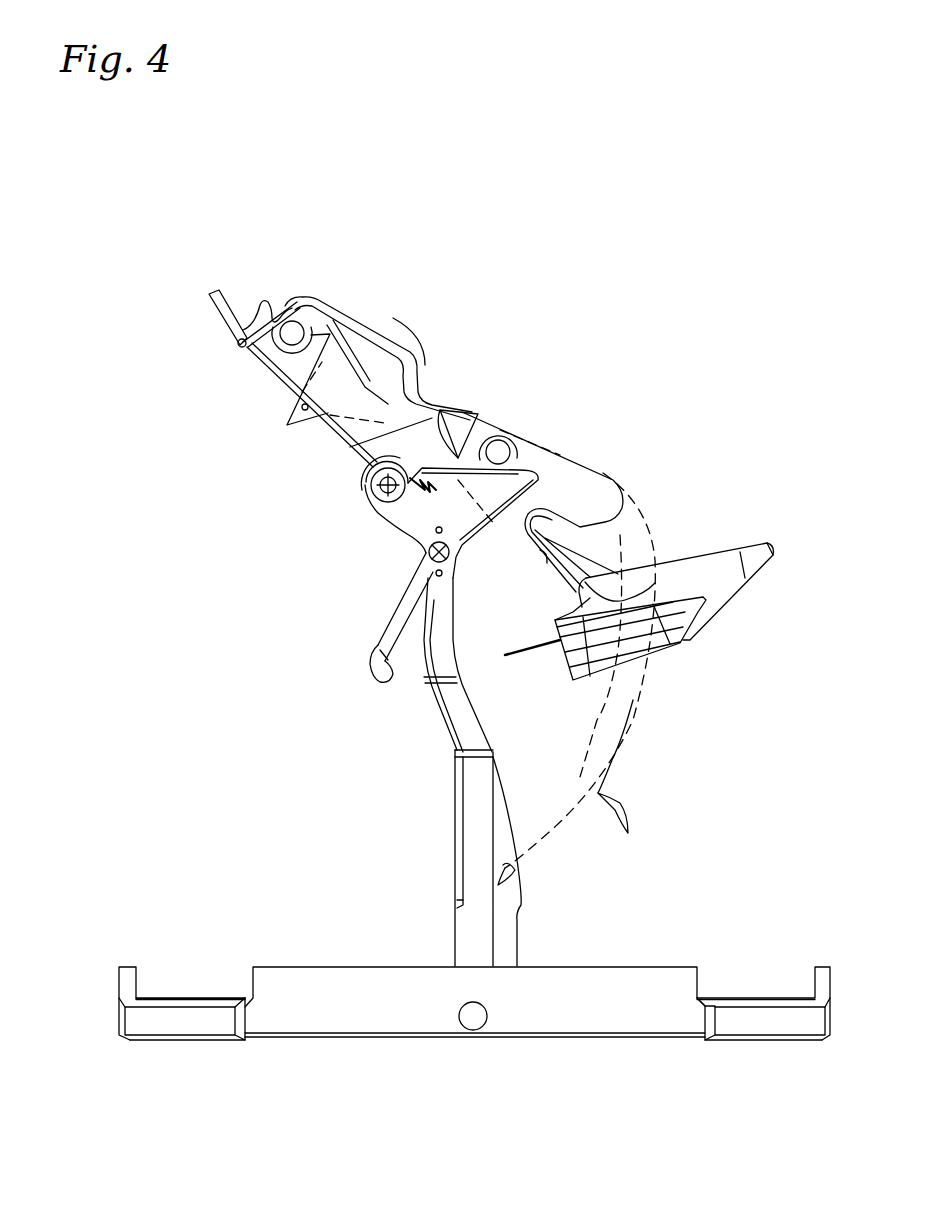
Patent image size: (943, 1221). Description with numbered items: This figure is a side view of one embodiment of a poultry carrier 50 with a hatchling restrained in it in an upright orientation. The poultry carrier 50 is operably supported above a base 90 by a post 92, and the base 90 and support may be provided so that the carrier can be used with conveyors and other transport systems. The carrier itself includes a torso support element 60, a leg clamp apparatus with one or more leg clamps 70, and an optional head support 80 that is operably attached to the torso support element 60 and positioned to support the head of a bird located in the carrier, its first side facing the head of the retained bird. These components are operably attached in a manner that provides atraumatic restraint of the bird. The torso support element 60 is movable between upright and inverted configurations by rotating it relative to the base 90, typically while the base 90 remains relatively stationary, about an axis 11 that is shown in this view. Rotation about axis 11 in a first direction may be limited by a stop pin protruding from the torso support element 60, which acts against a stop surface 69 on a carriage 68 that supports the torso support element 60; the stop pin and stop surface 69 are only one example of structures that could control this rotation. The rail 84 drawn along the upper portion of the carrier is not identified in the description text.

The poultry carrier 50 is at (538, 280).
The guide rail 84 is at (376, 334).
The head support 80 is at (268, 397).
The torso support element 60 is at (600, 470).
The axis 11 is at (362, 508).
The carriage 68 is at (390, 528).
The stop surface 69 is at (373, 660).
The post 92 is at (455, 820).
The base 90 is at (206, 998).
The leg clamp 70 is at (755, 608).